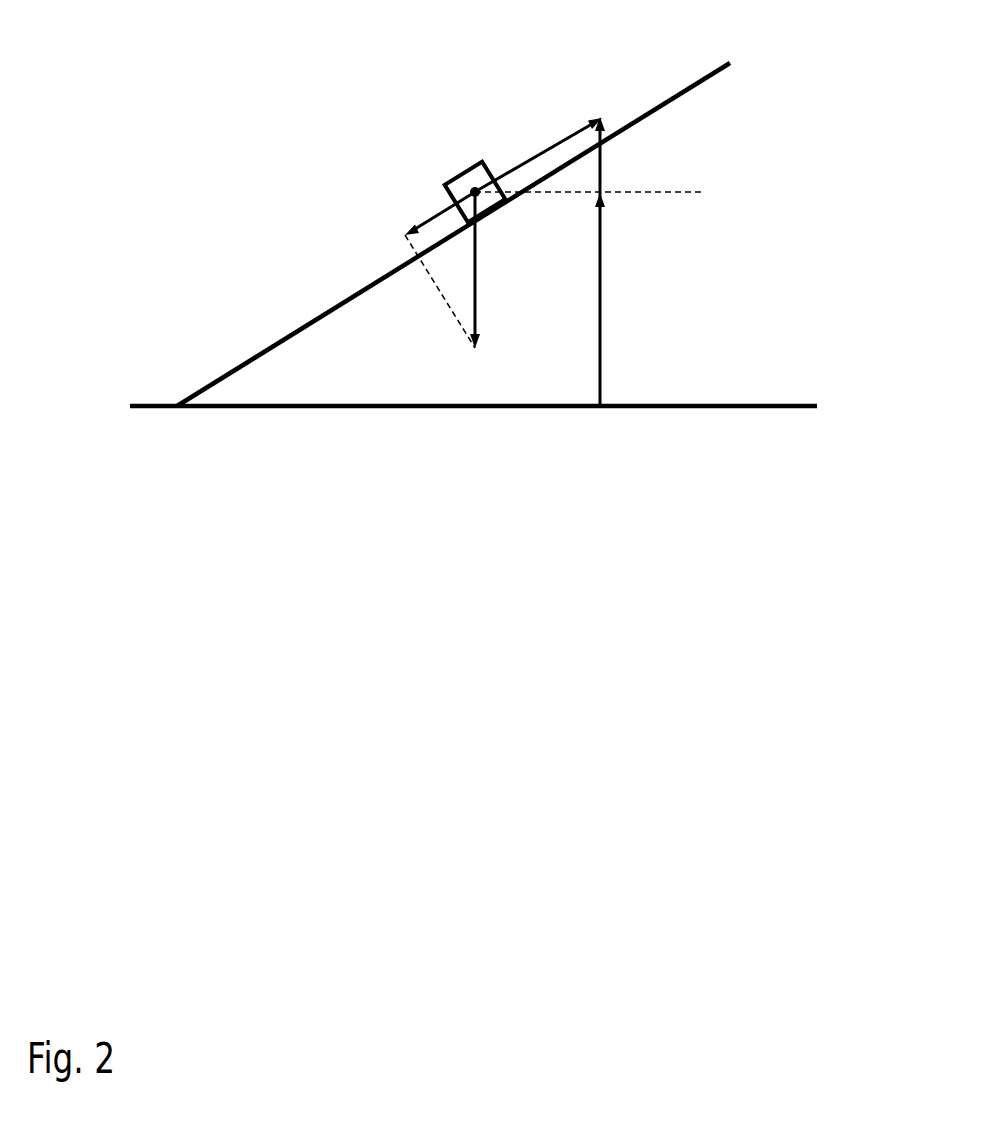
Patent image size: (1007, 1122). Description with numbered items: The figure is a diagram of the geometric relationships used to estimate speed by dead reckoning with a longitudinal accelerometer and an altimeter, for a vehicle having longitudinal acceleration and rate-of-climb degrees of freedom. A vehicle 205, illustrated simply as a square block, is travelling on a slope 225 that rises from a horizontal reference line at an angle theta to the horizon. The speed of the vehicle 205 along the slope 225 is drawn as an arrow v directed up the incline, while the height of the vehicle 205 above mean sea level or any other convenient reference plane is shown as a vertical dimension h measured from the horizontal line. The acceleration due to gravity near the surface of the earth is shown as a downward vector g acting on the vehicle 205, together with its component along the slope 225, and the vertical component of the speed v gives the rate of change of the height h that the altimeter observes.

The vehicle 205 is at (467, 165).
The slope 225 is at (657, 105).
The speed of the vehicle v is at (540, 152).
The acceleration due to gravity g is at (401, 253).
The height of the vehicle h is at (681, 261).